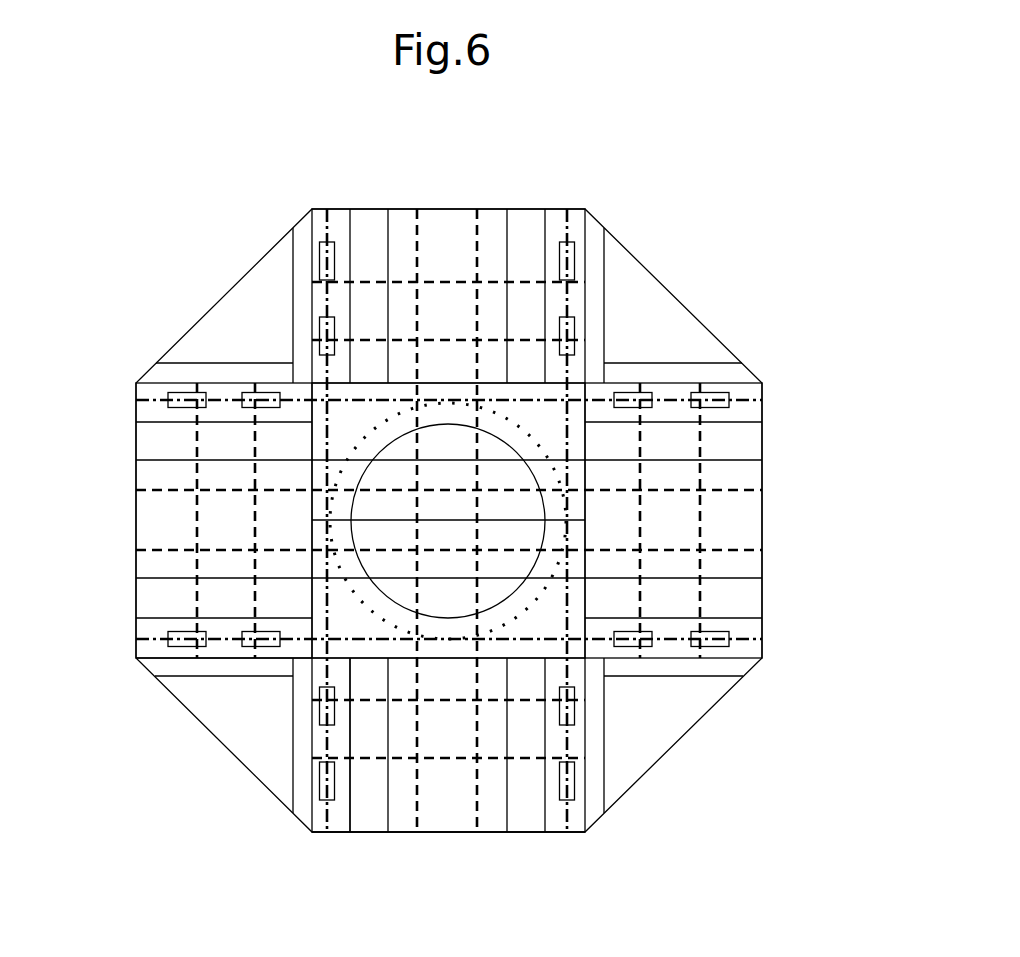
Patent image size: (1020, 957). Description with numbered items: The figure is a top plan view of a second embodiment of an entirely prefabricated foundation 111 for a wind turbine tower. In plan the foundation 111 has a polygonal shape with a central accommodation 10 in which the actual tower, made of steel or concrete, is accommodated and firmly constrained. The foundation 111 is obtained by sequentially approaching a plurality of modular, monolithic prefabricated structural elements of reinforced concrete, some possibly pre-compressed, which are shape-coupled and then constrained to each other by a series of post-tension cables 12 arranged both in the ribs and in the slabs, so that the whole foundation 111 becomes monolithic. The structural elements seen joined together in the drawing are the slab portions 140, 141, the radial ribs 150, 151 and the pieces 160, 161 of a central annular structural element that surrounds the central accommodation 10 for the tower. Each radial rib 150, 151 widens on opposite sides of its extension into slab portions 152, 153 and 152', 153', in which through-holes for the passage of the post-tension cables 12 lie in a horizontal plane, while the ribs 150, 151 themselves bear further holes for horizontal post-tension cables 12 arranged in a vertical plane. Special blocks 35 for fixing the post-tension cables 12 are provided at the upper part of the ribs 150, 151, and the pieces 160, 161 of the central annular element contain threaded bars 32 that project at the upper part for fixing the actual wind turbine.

The central accommodation 10 is at (456, 612).
The post-tension cables 12 is at (566, 230).
The threaded bars 32 is at (338, 478).
The special blocks 35 is at (727, 633).
The foundation 111 is at (687, 215).
The slab portion 140 is at (617, 770).
The slab portion 141 is at (433, 810).
The radial rib 150 is at (183, 660).
The radial rib 151 is at (340, 807).
The slab portion 152 is at (203, 520).
The slab portion 152' is at (448, 775).
The slab portion 153 is at (211, 739).
The slab portion 153' is at (248, 756).
The piece of central annular structural element 160 is at (547, 620).
The piece of central annular structural element 161 is at (572, 540).